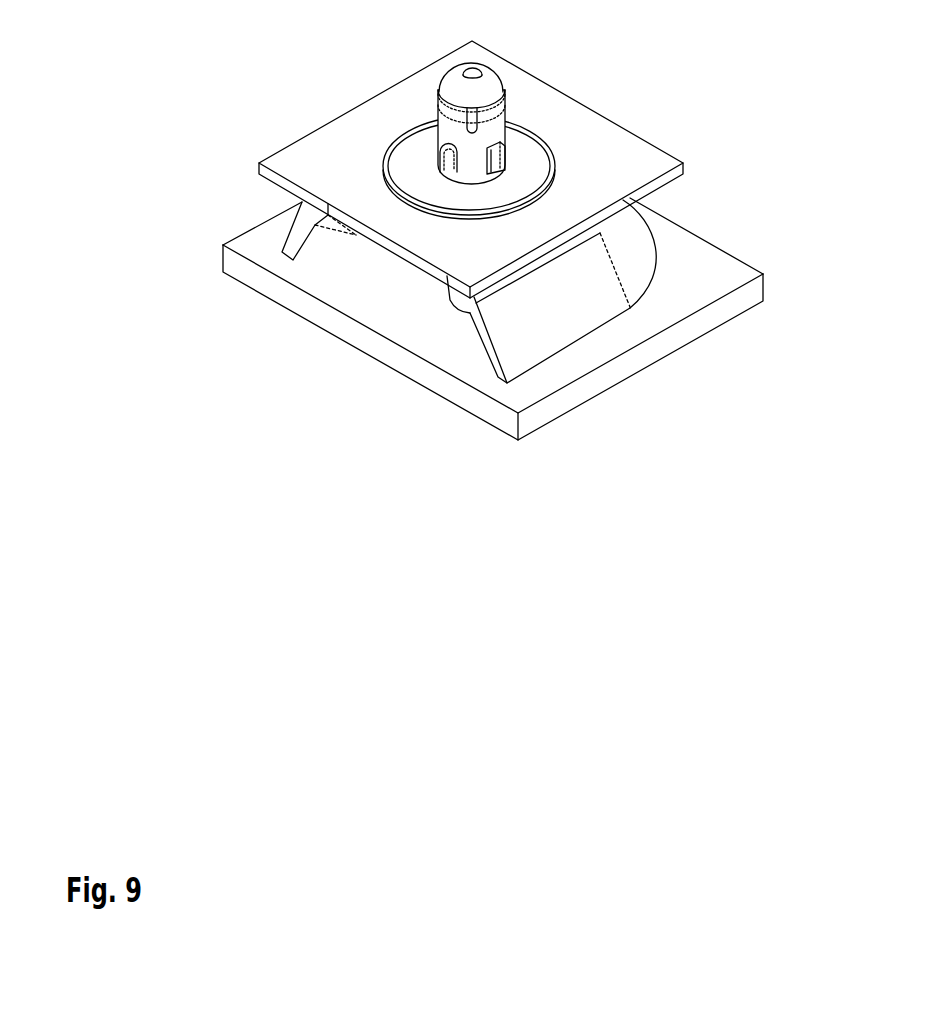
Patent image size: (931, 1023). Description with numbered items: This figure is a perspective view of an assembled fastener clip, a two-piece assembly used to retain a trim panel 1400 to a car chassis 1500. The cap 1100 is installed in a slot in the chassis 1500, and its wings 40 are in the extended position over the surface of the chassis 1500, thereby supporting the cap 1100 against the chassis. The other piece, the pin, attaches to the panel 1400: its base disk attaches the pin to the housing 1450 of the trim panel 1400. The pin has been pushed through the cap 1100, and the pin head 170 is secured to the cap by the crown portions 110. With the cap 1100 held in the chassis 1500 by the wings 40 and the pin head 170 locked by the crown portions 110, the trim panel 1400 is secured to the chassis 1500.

The pin head 170 is at (475, 80).
The crown portions 110 is at (490, 113).
The cap 1100 is at (492, 137).
The wings 40 is at (498, 160).
The chassis 1500 is at (628, 170).
The housing 1450 is at (622, 240).
The panel 1400 is at (607, 345).